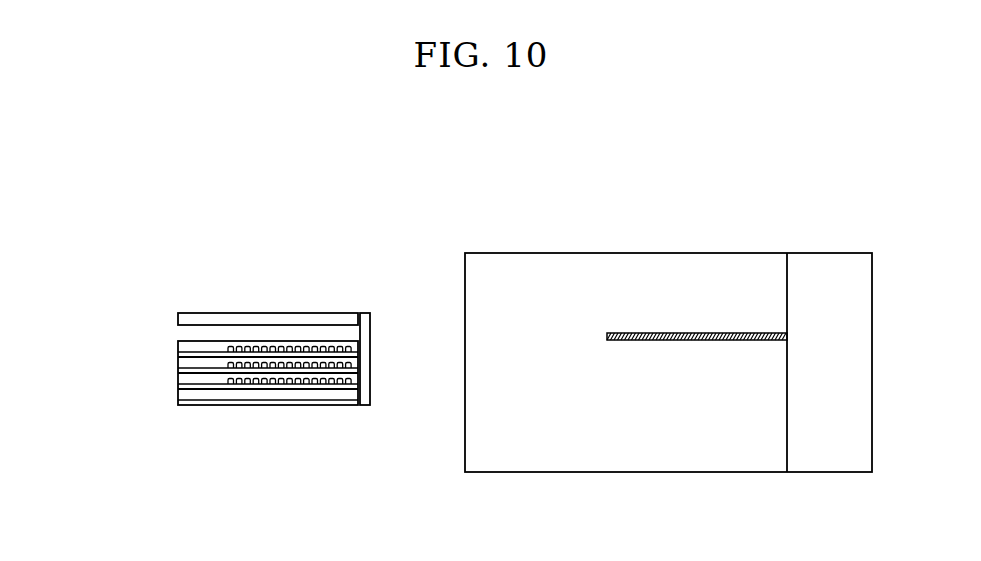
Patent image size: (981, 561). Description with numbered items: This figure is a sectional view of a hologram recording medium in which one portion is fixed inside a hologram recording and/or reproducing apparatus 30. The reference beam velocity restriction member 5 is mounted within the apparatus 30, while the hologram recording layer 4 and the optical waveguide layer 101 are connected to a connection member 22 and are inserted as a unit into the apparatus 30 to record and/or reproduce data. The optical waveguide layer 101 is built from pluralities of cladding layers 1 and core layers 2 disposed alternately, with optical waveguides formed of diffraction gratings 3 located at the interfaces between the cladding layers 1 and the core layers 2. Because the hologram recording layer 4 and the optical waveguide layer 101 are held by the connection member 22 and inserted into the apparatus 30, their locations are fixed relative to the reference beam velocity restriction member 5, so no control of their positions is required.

The optical waveguide layer 101 is at (213, 405).
The cladding layer 1 is at (178, 351).
The core layer 2 is at (216, 353).
The diffraction grating 3 is at (295, 355).
The hologram recording layer 4 is at (259, 313).
The connection member 22 is at (372, 315).
The hologram recording and/or reproducing apparatus 30 is at (498, 265).
The reference beam velocity restriction member 5 is at (607, 335).